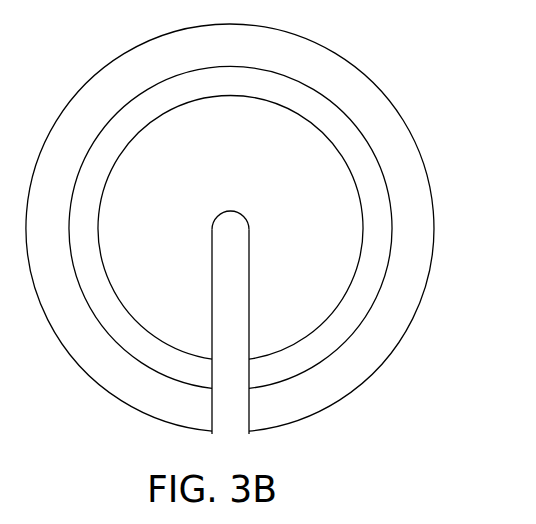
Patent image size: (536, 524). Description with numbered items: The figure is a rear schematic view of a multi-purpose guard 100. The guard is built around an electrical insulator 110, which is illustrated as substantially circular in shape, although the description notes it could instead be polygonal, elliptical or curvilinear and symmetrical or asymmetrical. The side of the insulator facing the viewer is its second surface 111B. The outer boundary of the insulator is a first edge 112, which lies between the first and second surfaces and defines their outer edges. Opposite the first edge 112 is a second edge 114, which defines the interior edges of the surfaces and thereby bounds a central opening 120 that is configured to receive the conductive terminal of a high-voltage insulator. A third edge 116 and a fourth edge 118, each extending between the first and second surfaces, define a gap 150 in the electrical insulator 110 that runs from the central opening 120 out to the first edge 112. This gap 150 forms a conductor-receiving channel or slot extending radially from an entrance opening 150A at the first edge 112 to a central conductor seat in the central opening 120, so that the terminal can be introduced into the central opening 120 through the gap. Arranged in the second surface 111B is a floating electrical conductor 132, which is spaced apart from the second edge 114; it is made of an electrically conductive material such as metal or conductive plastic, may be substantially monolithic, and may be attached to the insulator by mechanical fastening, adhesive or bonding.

The multi-purpose guard 100 is at (442, 85).
The electrical insulator 110 is at (330, 63).
The second surface 111B is at (416, 205).
The first edge 112 is at (431, 262).
The second edge 114 is at (227, 210).
The third edge 116 is at (249, 365).
The fourth edge 118 is at (212, 365).
The central opening 120 is at (233, 223).
The floating electrical conductor 132 is at (257, 82).
The gap 150 is at (225, 289).
The entrance opening 150A is at (230, 434).